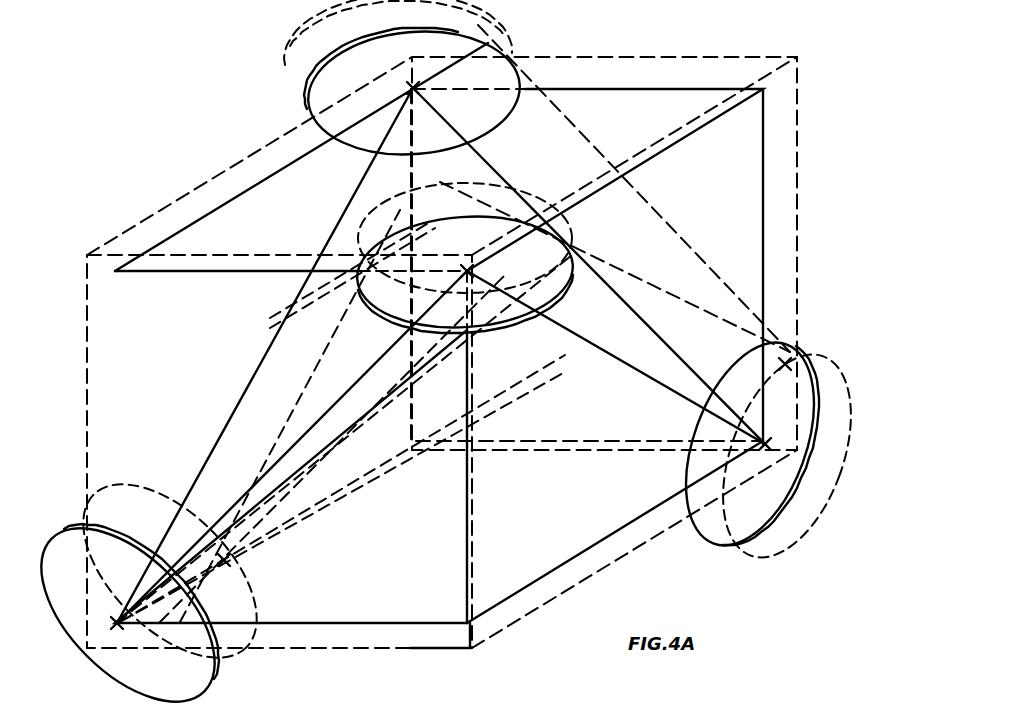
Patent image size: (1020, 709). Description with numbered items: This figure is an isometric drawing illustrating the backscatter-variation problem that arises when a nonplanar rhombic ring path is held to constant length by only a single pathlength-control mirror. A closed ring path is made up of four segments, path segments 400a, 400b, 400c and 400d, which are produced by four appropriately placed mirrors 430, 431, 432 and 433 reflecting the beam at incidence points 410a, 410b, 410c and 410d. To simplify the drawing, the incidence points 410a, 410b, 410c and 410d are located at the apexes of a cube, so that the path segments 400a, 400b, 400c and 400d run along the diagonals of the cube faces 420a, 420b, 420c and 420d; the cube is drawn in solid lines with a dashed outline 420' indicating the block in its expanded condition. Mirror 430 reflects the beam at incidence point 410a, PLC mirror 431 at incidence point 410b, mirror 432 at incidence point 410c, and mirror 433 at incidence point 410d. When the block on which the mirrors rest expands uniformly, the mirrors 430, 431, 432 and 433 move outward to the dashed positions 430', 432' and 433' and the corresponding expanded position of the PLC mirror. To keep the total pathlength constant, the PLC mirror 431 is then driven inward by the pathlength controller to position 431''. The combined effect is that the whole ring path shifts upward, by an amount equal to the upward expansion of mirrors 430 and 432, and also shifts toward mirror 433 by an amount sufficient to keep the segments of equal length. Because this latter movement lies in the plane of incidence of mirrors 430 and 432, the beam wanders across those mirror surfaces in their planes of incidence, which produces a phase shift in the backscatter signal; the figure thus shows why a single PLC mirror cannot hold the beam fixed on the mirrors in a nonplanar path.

The cube face 420a is at (418, 602).
The cube face 420b is at (243, 213).
The cube face 420c is at (623, 100).
The cube face 420d is at (752, 155).
The alternate position of cube 420' is at (442, 383).
The mirror 432 is at (373, 93).
The expanded position of mirror 432 432' is at (370, 32).
The mirror 430 is at (464, 288).
The expanded position of mirror 430 430' is at (465, 231).
The PLC mirror 431 is at (129, 603).
The inward position of PLC mirror 431 431'' is at (176, 571).
The mirror 433 is at (750, 452).
The expanded position of mirror 433 433' is at (797, 456).
The path segment 400a is at (358, 380).
The path segment 400b is at (252, 378).
The path segment 400c is at (494, 170).
The path segment 400d is at (634, 366).
The incidence point 410a is at (470, 265).
The incidence point 410b is at (116, 628).
The incidence point 410c is at (506, 14).
The incidence point 410d is at (746, 550).